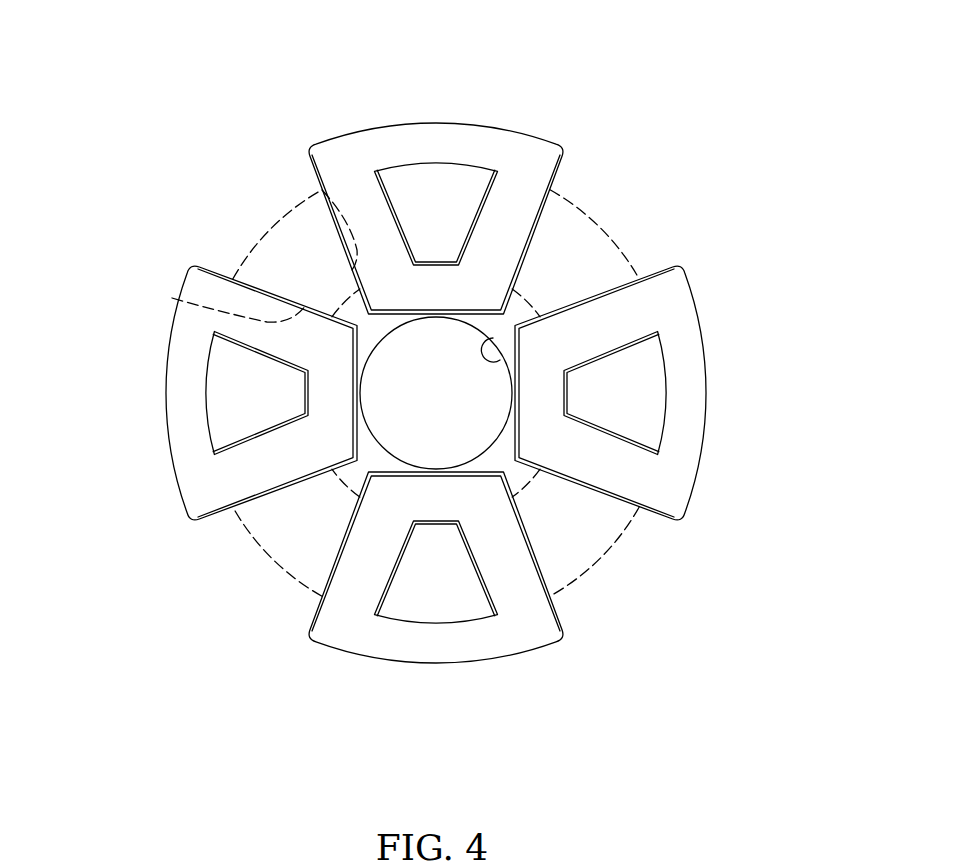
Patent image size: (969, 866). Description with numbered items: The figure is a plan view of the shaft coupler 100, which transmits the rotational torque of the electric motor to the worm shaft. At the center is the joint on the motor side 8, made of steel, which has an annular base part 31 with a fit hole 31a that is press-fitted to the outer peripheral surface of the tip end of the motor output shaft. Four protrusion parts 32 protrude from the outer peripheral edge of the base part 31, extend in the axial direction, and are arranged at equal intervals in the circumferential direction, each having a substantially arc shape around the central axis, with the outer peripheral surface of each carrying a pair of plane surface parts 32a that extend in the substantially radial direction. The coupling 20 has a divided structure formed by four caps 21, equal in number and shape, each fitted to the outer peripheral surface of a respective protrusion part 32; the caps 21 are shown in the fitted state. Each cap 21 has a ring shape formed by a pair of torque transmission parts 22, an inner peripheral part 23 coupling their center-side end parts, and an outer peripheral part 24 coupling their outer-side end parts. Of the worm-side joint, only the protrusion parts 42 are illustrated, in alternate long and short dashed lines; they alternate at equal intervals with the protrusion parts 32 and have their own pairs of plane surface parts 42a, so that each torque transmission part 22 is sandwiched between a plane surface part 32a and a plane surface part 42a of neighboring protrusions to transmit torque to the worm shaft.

The shaft coupler 100 is at (642, 83).
The joint on the motor side 8 is at (567, 247).
The base part 31 is at (562, 283).
The fit hole 31a is at (482, 352).
The coupling 20 is at (445, 374).
The cap 21 is at (417, 117).
The torque transmission part 22 is at (365, 222).
The inner peripheral part 23 is at (432, 293).
The outer peripheral part 24 is at (480, 143).
The protrusion part 32 is at (453, 190).
The plane surface part 32a is at (393, 215).
The protrusion part 42 is at (275, 225).
The plane surface part 42a is at (318, 192).